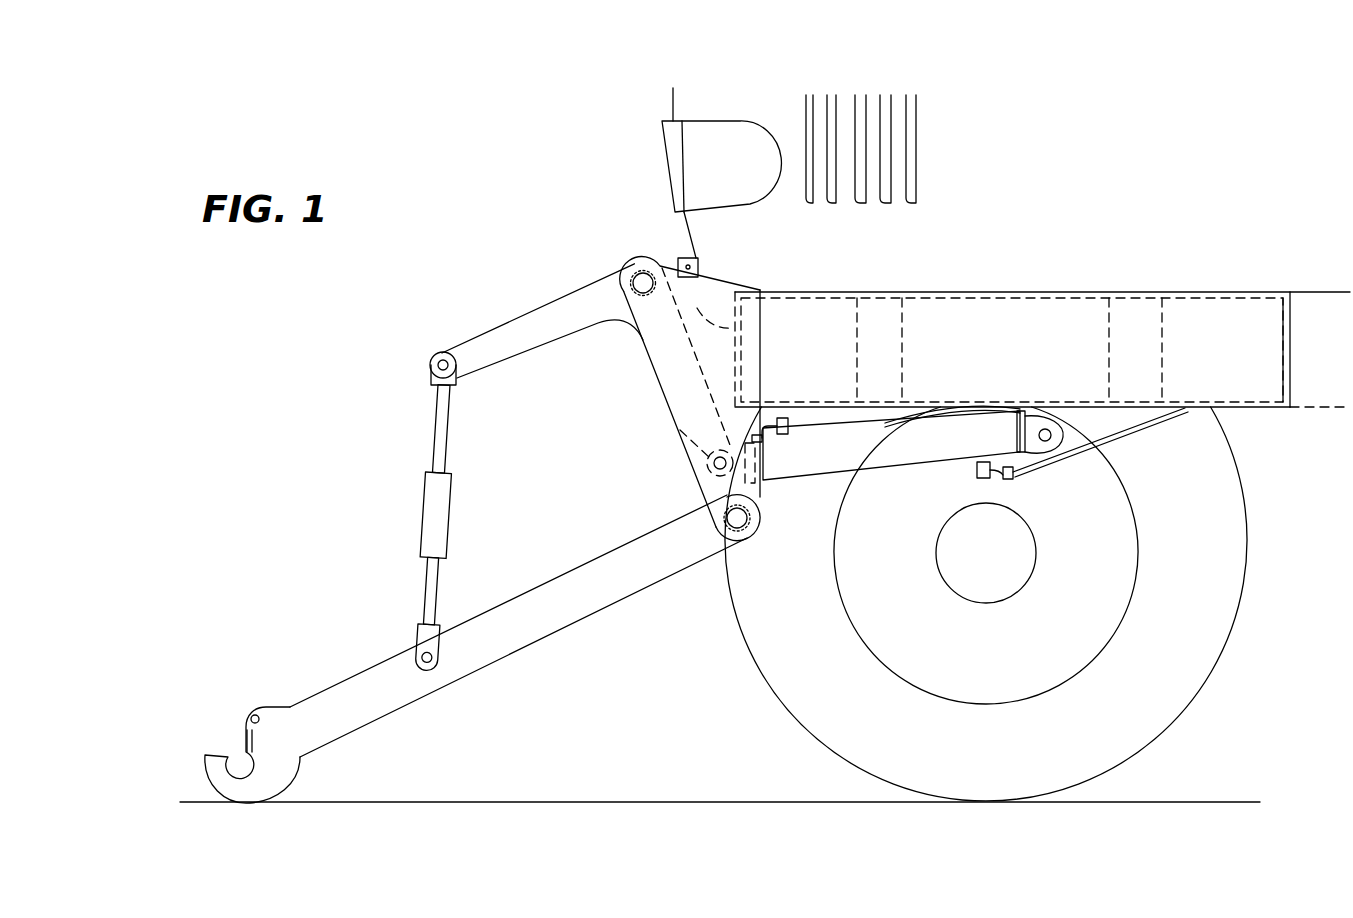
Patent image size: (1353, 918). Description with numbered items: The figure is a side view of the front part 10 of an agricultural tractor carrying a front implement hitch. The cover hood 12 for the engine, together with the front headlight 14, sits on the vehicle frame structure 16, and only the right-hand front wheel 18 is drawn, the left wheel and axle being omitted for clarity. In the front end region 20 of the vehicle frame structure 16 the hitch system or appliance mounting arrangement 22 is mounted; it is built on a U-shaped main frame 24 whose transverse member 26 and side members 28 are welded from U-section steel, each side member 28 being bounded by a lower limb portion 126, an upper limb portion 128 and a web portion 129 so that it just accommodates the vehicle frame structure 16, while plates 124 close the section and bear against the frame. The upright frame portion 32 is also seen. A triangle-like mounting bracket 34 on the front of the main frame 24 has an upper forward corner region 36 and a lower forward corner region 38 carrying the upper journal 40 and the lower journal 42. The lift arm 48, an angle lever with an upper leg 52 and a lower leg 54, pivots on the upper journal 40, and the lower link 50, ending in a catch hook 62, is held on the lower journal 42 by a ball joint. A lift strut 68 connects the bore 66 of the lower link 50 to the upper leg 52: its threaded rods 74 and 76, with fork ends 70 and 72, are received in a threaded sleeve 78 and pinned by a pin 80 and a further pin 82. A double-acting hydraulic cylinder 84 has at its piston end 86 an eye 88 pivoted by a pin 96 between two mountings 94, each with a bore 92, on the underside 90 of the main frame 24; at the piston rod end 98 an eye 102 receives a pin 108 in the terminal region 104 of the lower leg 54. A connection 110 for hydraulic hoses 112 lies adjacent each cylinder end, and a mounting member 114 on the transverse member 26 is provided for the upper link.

The front part 10 is at (512, 160).
The cover hood 12 is at (1038, 160).
The front headlight 14 is at (708, 171).
The vehicle frame structure 16 is at (1316, 297).
The right-hand front wheel 18 is at (1247, 600).
The front end region 20 is at (912, 283).
The hitch system or appliance mounting arrangement 22 is at (322, 406).
The main frame 24 is at (1030, 292).
The transverse member 26 is at (709, 306).
The side member 28 is at (1006, 351).
The upright frame member 32 is at (769, 284).
The mounting bracket 34 is at (680, 447).
The upper forward corner region 36 is at (752, 548).
The lower forward corner region 38 is at (627, 240).
The upper journal 40 is at (637, 276).
The lower journal 42 is at (733, 538).
The lift arm 48 is at (545, 306).
The lower link 50 is at (552, 583).
The upper leg 52 is at (547, 347).
The lower leg 54 is at (680, 388).
The catch hook 62 is at (212, 708).
The bore 66 is at (426, 670).
The lift strut 68 is at (395, 515).
The fork end 70 is at (432, 379).
The fork end 72 is at (433, 636).
The threaded rod 74 is at (438, 432).
The threaded rod 76 is at (438, 577).
The threaded sleeve 78 is at (457, 503).
The pin 80 is at (442, 355).
The further pin 82 is at (452, 660).
The double-acting hydraulic cylinder 84 is at (905, 478).
The piston end 86 is at (1020, 408).
The eye 88 is at (1065, 432).
The underside 90 is at (1268, 415).
The bore 92 is at (1056, 480).
The mountings 94 is at (1062, 450).
The pin 96 is at (1040, 437).
The piston rod end 98 is at (766, 505).
The eye 102 is at (713, 487).
The terminal region 104 is at (668, 483).
The pin 108 is at (757, 491).
The connection 110 is at (783, 435).
The hydraulic hoses 112 is at (832, 416).
The mounting member 114 is at (683, 257).
The plates 124 is at (888, 353).
The lower limb portion 126 is at (1258, 405).
The upper limb portion 128 is at (1283, 300).
The web portion 129 is at (1075, 300).